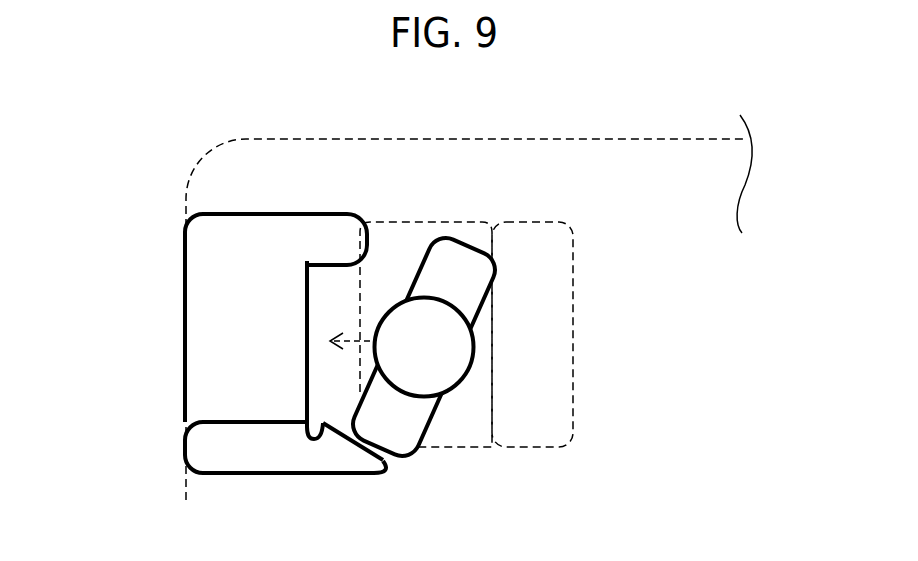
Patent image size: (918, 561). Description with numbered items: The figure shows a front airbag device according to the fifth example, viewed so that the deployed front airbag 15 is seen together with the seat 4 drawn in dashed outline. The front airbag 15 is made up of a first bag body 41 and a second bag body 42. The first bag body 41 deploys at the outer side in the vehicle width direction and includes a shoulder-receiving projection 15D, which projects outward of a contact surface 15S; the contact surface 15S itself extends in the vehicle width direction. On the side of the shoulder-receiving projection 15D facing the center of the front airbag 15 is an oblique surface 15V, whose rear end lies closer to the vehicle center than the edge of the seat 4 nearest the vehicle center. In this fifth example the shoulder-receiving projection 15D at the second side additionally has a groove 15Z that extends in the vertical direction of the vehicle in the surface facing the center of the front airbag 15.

The seat 4 is at (560, 363).
The front airbag 15 is at (240, 313).
The first bag body 41 is at (265, 313).
The second bag body 42 is at (217, 442).
The shoulder-receiving projection 15D is at (345, 240).
The groove 15Z is at (318, 420).
The contact surface 15S is at (310, 345).
The oblique surface 15V is at (330, 431).